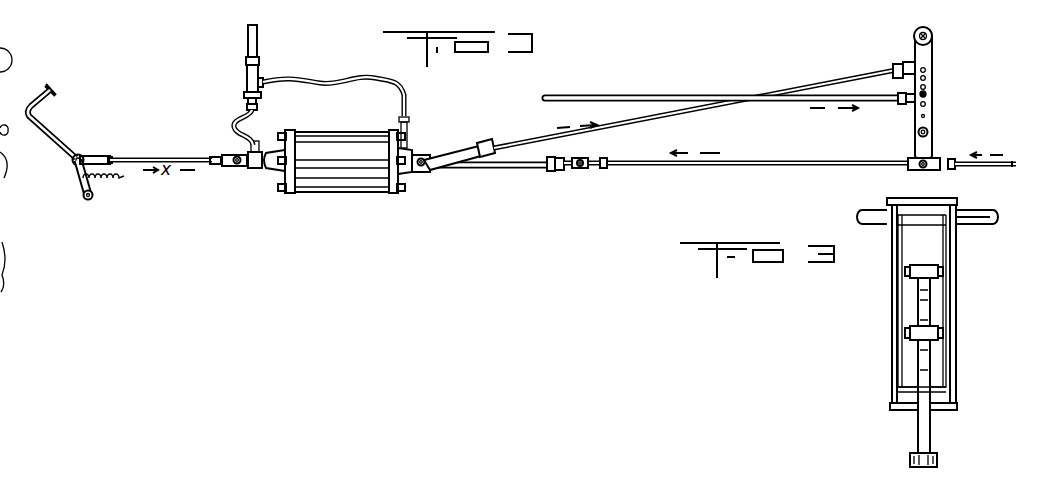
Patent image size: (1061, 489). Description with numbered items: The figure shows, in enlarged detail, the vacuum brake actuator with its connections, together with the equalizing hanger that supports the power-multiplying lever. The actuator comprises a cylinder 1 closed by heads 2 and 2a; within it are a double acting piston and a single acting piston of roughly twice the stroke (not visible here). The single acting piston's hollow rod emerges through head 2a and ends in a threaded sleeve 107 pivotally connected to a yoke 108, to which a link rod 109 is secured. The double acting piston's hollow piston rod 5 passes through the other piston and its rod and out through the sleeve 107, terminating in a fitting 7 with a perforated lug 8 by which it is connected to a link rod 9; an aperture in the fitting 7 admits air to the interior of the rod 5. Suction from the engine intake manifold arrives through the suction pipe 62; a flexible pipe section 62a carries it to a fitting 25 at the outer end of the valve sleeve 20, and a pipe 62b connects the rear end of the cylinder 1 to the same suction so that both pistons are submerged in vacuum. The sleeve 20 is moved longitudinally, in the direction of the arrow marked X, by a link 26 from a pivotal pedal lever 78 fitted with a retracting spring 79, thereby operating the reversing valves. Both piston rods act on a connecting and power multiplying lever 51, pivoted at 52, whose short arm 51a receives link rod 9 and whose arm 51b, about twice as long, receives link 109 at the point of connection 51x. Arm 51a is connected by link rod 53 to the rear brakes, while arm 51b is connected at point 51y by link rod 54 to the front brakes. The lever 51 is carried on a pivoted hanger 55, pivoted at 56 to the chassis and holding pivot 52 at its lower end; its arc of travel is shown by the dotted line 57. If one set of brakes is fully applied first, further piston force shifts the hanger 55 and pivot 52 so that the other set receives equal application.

In FIG. 2, the cylinder 1 is at (341, 177).
In FIG. 2, the cylinder head 2 is at (288, 176).
In FIG. 2, the cylinder head 2a is at (399, 177).
In FIG. 2, the hollow piston rod 5 is at (503, 168).
In FIG. 2, the terminal fitting 7 is at (553, 171).
In FIG. 2, the perforated lug 8 is at (580, 167).
In FIG. 2, the link rod 9 is at (771, 165).
In FIG. 2, the valve sleeve 20 is at (259, 170).
In FIG. 2, the fitting 25 is at (245, 166).
In FIG. 2, the link 26 is at (147, 160).
In FIG. 2, the connecting and power multiplying lever 51 is at (915, 131).
In FIG. 3, the connecting and power multiplying lever 51 is at (930, 398).
In FIG. 2, the short arm 51a is at (930, 154).
In FIG. 3, the short arm 51a is at (929, 435).
In FIG. 2, the long arm 51b is at (931, 82).
In FIG. 3, the long arm 51b is at (922, 335).
In FIG. 2, the point of connection 51x is at (917, 66).
In FIG. 2, the point of connection 51y is at (928, 102).
In FIG. 2, the pivot 52 is at (927, 128).
In FIG. 3, the pivot 52 is at (888, 397).
In FIG. 2, the link rod 53 is at (1013, 163).
In FIG. 3, the link rod 53 is at (930, 458).
In FIG. 2, the link rod 54 is at (572, 98).
In FIG. 2, the pivoted hanger 55 is at (934, 54).
In FIG. 3, the pivoted hanger 55 is at (958, 306).
In FIG. 2, the hanger pivot 56 is at (932, 30).
In FIG. 3, the hanger pivot 56 is at (978, 224).
In FIG. 2, the arc of travel 57 is at (926, 118).
In FIG. 2, the suction pipe 62 is at (248, 38).
In FIG. 2, the flexible pipe section 62a is at (242, 125).
In FIG. 2, the pipe 62b is at (337, 80).
In FIG. 2, the pedal lever 78 is at (60, 143).
In FIG. 2, the retracting spring 79 is at (115, 180).
In FIG. 2, the threaded sleeve 107 is at (424, 172).
In FIG. 2, the yoke 108 is at (462, 152).
In FIG. 2, the link rod 109 is at (670, 117).